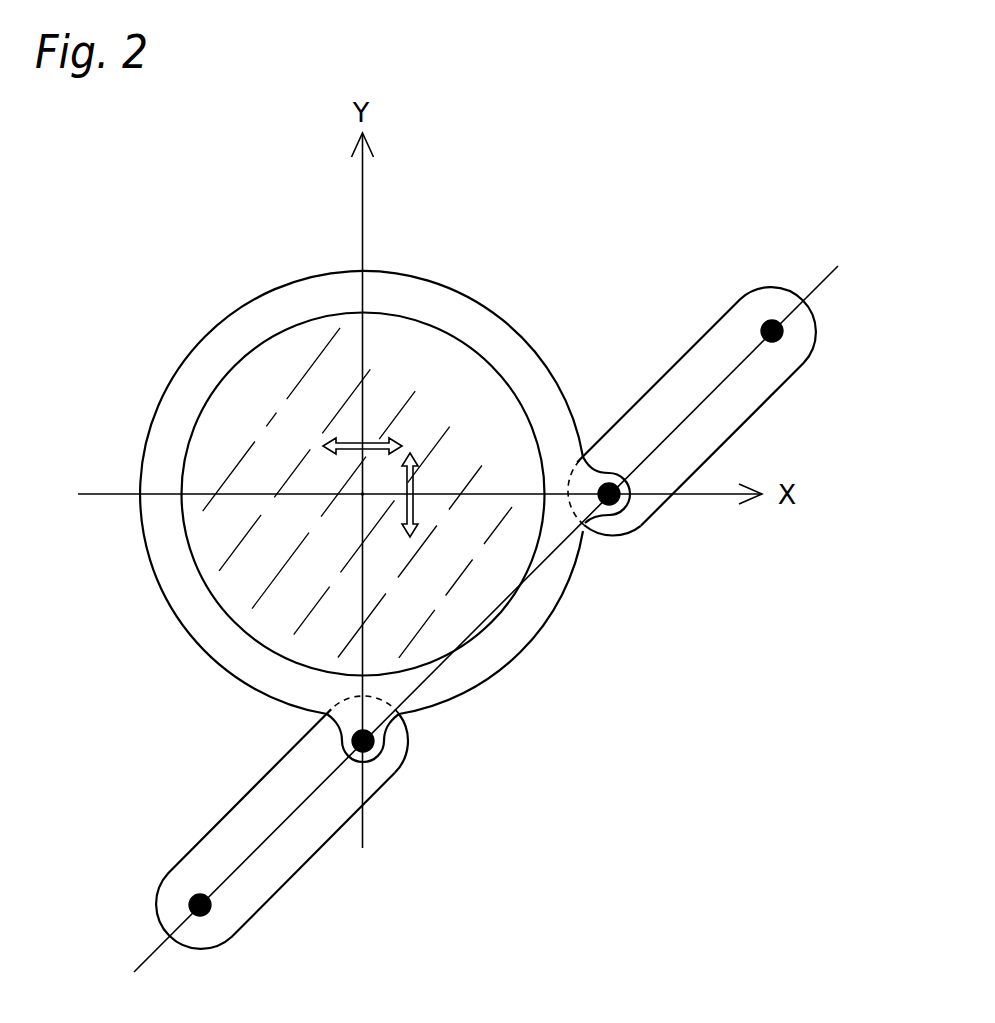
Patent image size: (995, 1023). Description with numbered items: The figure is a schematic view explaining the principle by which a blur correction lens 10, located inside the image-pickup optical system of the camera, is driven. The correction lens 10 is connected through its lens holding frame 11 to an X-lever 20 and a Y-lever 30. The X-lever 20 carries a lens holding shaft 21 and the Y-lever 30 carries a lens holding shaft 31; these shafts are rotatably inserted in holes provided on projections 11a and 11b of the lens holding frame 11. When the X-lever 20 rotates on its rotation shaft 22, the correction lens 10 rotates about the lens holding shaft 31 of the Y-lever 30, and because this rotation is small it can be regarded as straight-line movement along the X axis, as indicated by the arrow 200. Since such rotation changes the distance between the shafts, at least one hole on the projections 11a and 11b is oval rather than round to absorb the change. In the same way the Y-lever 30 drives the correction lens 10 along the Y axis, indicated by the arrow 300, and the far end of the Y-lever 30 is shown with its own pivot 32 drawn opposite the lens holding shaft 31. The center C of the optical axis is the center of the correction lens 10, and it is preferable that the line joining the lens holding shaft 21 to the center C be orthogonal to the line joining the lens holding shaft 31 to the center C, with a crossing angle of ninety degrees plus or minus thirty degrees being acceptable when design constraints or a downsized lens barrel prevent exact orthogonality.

The blur correction lens 10 is at (453, 358).
The lens holding frame 11 is at (515, 365).
The projection of the lens holding frame 11a is at (608, 516).
The projection of the lens holding frame 11b is at (343, 735).
The X-lever 20 is at (737, 412).
The lens holding shaft 21 is at (617, 504).
The rotation shaft 22 is at (771, 320).
The Y-lever 30 is at (316, 841).
The lens holding shaft 31 is at (385, 741).
The second arm end pin 32 is at (212, 910).
The arrow 200 is at (353, 445).
The arrow 300 is at (416, 508).
The center of the optical axis C is at (352, 494).